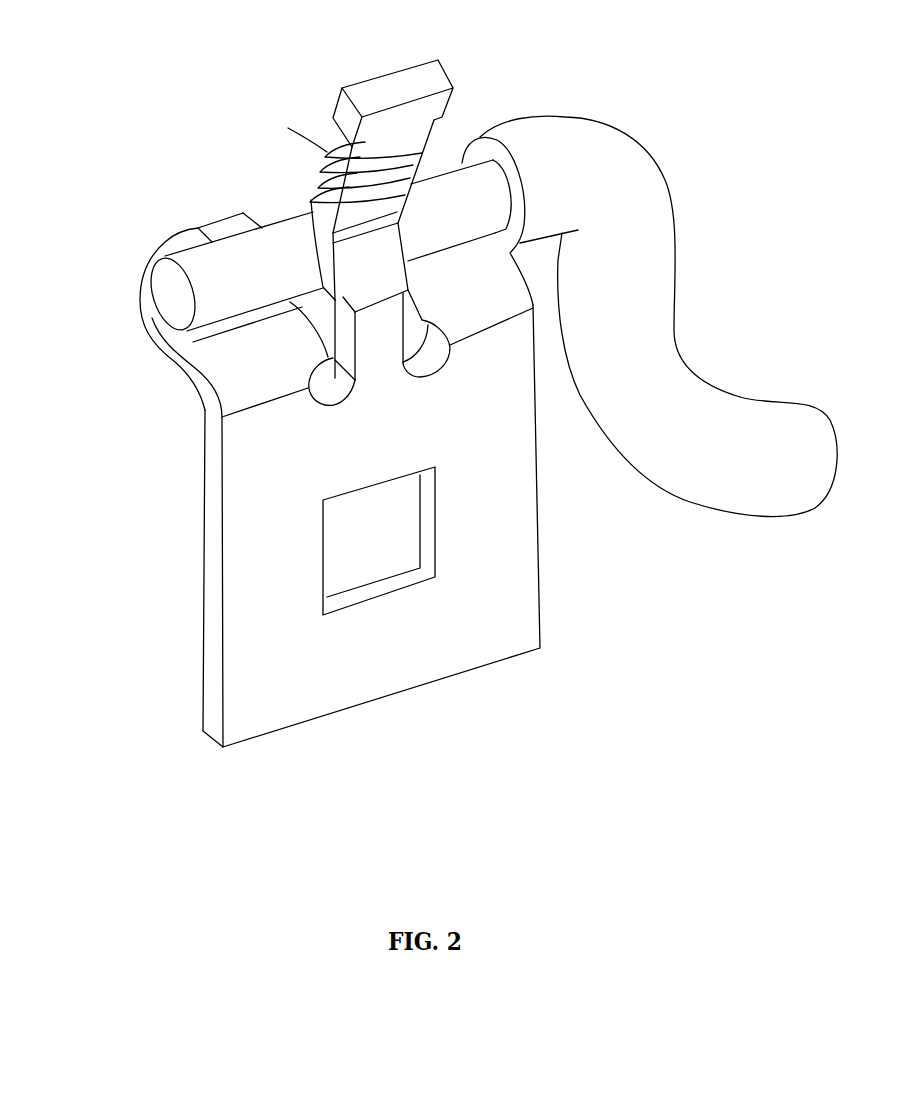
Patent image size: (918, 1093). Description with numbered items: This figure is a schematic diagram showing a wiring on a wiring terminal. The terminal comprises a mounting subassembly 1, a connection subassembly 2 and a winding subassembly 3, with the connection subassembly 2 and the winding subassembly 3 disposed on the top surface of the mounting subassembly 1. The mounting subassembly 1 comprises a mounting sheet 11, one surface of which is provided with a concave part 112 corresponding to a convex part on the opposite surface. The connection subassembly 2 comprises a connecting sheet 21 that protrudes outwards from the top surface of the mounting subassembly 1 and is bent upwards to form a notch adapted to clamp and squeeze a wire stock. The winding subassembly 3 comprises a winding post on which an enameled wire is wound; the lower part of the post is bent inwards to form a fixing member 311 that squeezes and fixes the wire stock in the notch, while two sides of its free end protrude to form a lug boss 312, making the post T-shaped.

The mounting subassembly 1 is at (180, 552).
The mounting sheet 11 is at (270, 617).
The concave part 112 is at (370, 540).
The connection subassembly 2 is at (187, 217).
The connecting sheet 21 is at (147, 300).
The winding subassembly 3 is at (285, 150).
The fixing member 311 is at (373, 260).
The lug boss 312 is at (348, 118).